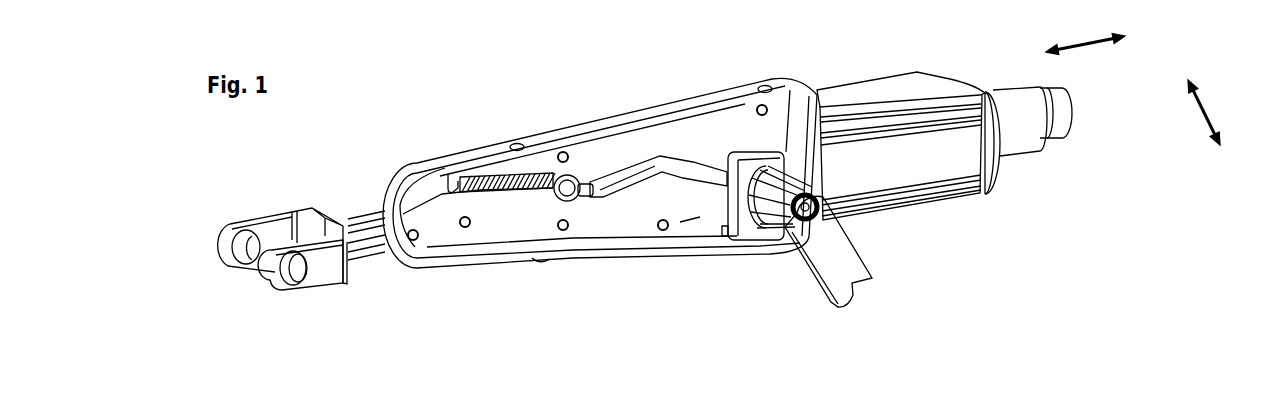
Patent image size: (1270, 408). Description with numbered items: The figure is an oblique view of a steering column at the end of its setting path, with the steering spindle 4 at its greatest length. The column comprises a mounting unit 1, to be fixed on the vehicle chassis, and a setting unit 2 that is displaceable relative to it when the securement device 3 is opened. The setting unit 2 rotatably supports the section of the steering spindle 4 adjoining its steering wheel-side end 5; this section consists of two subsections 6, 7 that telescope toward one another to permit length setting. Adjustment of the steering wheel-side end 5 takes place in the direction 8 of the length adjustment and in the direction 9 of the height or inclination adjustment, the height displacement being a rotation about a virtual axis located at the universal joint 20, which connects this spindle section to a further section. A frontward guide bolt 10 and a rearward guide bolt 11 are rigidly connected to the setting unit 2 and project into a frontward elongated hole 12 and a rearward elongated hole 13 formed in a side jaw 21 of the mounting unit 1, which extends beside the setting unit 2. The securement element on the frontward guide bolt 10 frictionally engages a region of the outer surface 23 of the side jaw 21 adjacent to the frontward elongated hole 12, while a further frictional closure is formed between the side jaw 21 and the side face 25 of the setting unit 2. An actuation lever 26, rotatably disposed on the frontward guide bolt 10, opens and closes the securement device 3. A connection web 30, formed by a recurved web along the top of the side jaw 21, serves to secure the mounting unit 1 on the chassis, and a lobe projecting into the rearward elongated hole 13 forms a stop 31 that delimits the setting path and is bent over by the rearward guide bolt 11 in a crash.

The mounting unit 1 is at (446, 270).
The setting unit 2 is at (952, 202).
The securement device 3 is at (758, 240).
The steering spindle 4 is at (1018, 157).
The steering wheel-side end 5 is at (1072, 120).
The subsection 6 is at (1003, 100).
The subsection 7 is at (367, 233).
The direction of the length adjustment 8 is at (1080, 48).
The direction of the height or inclination adjustment 9 is at (1208, 110).
The frontward guide bolt 10 is at (807, 227).
The rearward guide bolt 11 is at (583, 207).
The frontward elongated hole 12 is at (703, 175).
The rearward elongated hole 13 is at (463, 188).
The universal joint 20 is at (320, 290).
The side jaw 21 is at (617, 228).
The outer surface of the side jaw 23 is at (688, 220).
The side face of the setting unit 25 is at (853, 180).
The actuation lever 26 is at (843, 283).
The connection web 30 is at (572, 135).
The stop 31 is at (455, 190).